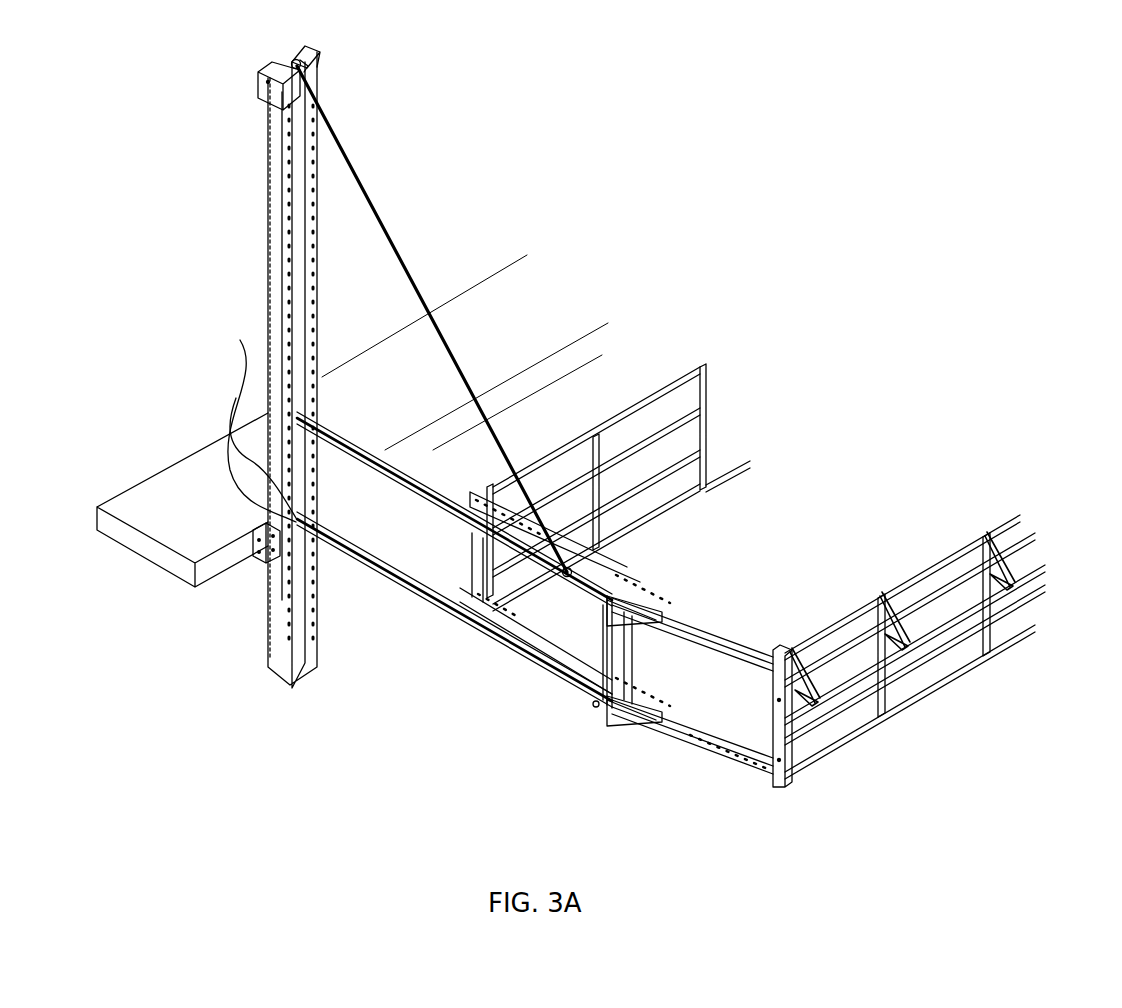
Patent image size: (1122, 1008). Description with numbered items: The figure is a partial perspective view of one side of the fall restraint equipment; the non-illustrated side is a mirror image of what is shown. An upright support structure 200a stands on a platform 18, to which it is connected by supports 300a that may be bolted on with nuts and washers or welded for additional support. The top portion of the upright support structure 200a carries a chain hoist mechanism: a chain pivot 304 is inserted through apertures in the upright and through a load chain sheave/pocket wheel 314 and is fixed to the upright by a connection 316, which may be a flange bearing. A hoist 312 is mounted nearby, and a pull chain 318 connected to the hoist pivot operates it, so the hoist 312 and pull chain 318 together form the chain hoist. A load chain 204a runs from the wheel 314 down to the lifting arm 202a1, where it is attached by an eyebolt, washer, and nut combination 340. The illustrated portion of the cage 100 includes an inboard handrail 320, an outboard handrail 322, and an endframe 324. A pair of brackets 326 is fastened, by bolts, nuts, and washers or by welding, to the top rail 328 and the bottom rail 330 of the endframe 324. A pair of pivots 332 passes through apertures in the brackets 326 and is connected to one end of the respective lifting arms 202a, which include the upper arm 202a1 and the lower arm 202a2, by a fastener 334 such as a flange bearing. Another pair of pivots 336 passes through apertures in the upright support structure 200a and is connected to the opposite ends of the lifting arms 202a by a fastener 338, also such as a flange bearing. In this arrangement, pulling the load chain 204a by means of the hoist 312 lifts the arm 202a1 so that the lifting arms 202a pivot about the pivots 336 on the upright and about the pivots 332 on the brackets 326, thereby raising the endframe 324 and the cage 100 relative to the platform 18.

The platform 18 is at (155, 500).
The cage 100 is at (824, 629).
The upright support structure 200a is at (270, 642).
The lifting arms 202a is at (454, 549).
The lifting arm 202a1 is at (336, 430).
The lower horizontal arm 202a2 is at (345, 533).
The load chain 204a is at (365, 176).
The support 300a is at (262, 560).
The chain pivot 304 is at (306, 66).
The hoist 312 is at (258, 80).
The load chain sheave/pocket wheel 314 is at (292, 62).
The connection 316 is at (318, 52).
The pull chain 318 is at (266, 210).
The inboard handrail 320 is at (685, 368).
The outboard handrail 322 is at (884, 585).
The endframe 324 is at (690, 735).
The brackets 326 is at (612, 700).
The top rail 328 is at (730, 650).
The bottom rail 330 is at (776, 786).
The pivots 332 is at (592, 706).
The fastener 334 is at (598, 702).
The pivots 336 is at (236, 398).
The fastener 338 is at (240, 342).
The eyebolt, washer, and nut combination 340 is at (575, 572).